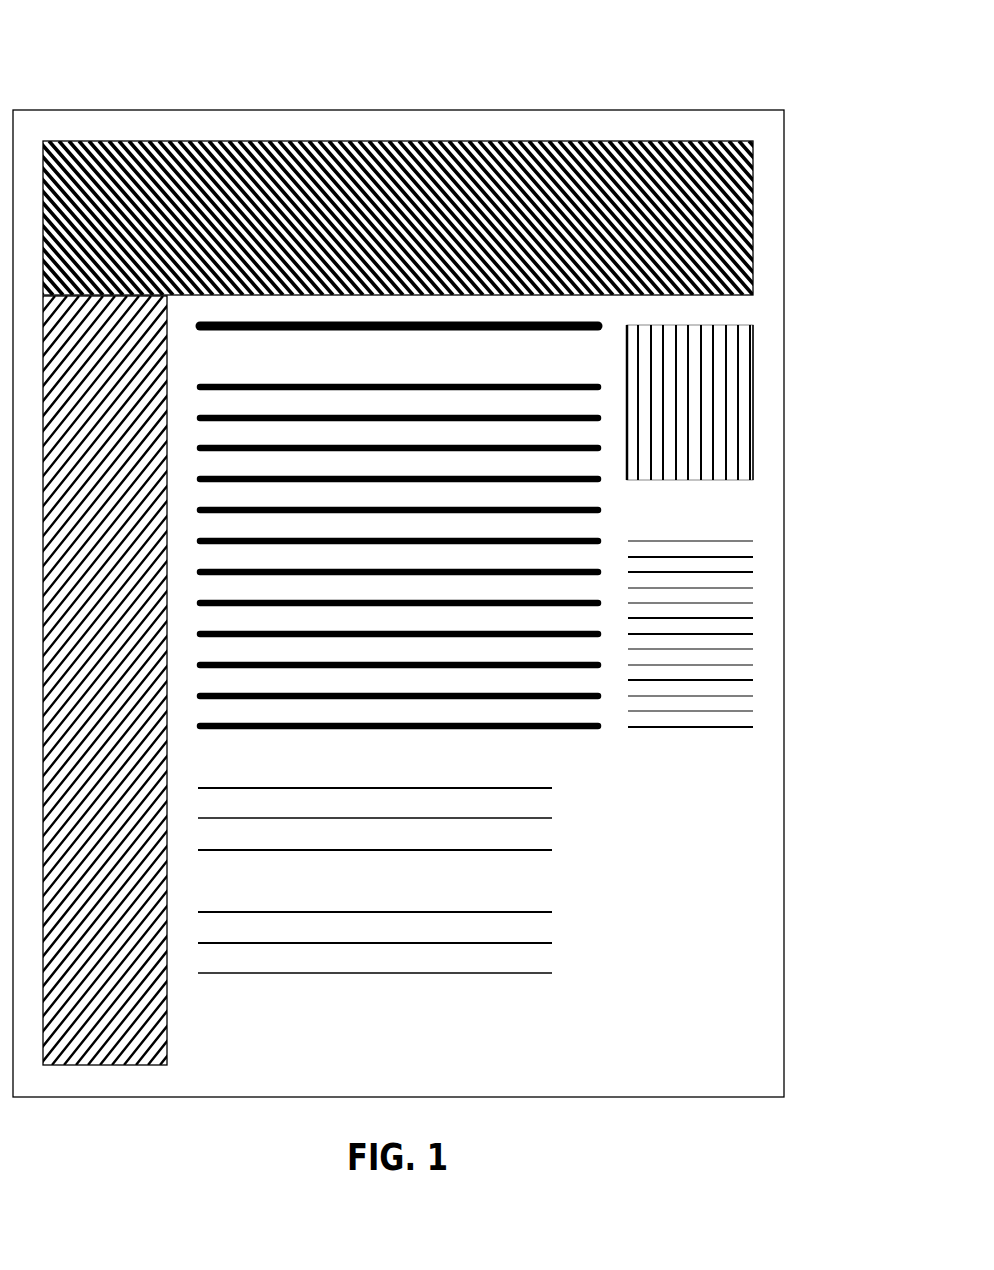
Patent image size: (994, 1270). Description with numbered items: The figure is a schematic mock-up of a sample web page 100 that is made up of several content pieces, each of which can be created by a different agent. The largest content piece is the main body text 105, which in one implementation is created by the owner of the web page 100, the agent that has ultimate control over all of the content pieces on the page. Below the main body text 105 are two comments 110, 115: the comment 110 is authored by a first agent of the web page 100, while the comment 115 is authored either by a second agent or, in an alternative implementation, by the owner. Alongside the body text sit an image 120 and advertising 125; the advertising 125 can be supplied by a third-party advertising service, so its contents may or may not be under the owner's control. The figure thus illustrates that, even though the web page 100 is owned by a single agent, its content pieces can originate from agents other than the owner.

The web page 100 is at (131, 70).
The main body text 105 is at (524, 730).
The comment 110 is at (505, 850).
The comment 115 is at (505, 973).
The image 120 is at (737, 480).
The advertising 125 is at (738, 728).